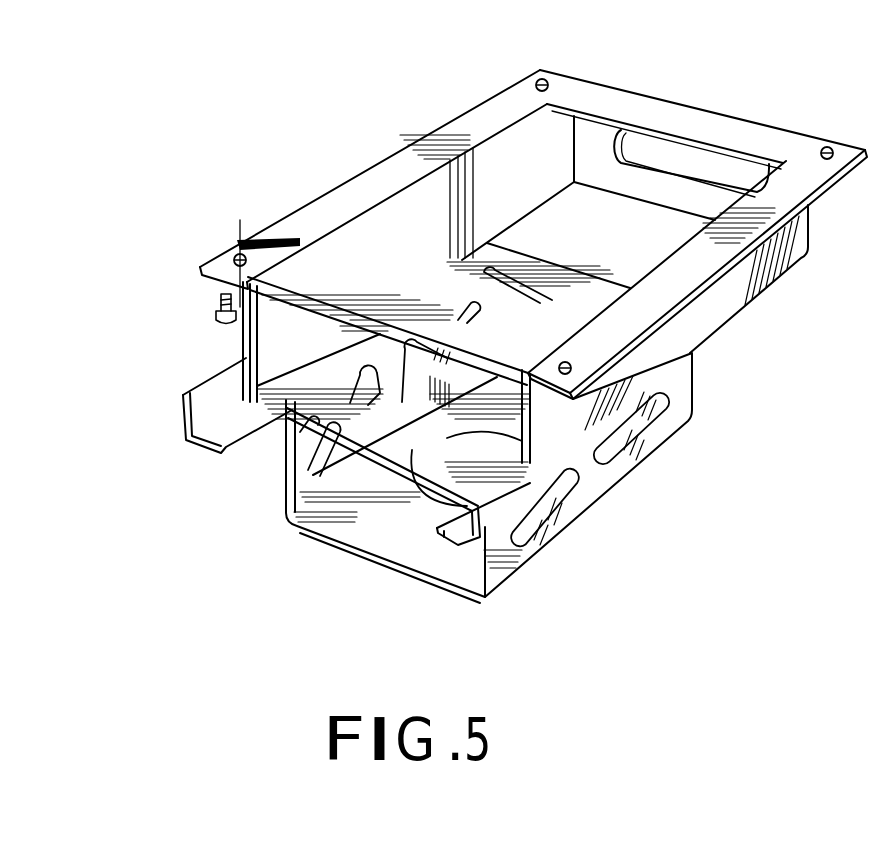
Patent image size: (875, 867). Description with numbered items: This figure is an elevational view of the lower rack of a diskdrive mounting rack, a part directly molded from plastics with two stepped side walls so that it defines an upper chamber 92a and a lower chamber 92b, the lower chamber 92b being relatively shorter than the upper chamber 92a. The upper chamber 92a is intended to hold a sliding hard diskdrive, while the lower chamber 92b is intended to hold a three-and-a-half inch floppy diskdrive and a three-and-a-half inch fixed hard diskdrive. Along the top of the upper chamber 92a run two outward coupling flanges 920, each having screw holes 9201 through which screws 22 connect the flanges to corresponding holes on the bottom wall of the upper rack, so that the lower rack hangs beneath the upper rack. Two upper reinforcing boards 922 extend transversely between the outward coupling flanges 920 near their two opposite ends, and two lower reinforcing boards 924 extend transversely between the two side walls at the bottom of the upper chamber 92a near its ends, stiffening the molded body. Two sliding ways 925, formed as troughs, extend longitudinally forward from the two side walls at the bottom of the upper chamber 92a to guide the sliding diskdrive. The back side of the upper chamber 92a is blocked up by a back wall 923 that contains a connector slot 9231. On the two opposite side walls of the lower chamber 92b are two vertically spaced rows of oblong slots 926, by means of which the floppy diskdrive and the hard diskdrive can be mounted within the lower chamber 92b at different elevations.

The outward coupling flange 920 is at (343, 193).
The screw hole 9201 is at (233, 251).
The screw 22 is at (220, 303).
The upper reinforcing board 922 is at (613, 103).
The connector slot 9231 is at (703, 163).
The back wall 923 is at (593, 140).
The upper chamber 92a is at (290, 336).
The sliding way 925 is at (182, 428).
The lower chamber 92b is at (317, 533).
The lower reinforcing board 924 is at (397, 437).
The oblong slot 926 is at (633, 423).